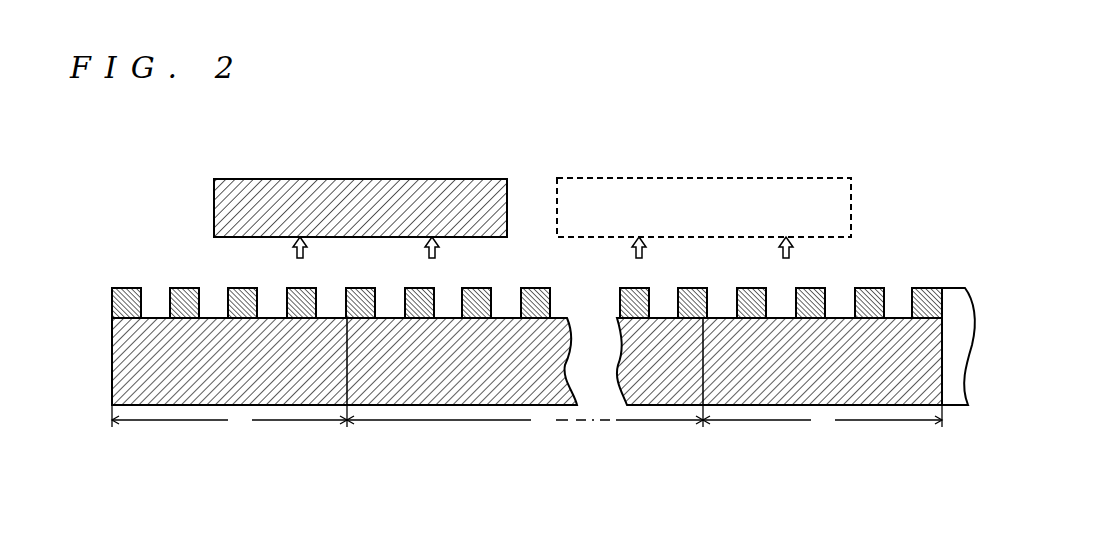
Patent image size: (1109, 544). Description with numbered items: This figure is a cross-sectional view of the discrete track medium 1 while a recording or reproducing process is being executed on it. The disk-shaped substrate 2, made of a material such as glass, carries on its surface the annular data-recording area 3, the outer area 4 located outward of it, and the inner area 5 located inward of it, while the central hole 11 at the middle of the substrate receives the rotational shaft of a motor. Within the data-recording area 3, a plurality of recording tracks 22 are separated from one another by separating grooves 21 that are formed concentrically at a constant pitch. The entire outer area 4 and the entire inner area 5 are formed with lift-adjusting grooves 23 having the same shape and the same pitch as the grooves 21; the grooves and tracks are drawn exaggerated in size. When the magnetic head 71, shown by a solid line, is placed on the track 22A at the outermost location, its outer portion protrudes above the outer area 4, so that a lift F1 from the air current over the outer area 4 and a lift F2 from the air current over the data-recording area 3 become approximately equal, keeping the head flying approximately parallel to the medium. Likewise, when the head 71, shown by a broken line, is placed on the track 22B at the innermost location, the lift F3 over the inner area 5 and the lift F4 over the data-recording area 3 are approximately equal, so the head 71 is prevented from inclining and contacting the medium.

The discrete track medium 1 is at (457, 462).
The disk-shaped substrate 2 is at (853, 402).
The data-recording area 3 is at (525, 419).
The outer area 4 is at (229, 419).
The inner area 5 is at (822, 419).
The central hole 11 is at (955, 338).
The separating grooves 21 is at (447, 303).
The recording tracks 22 is at (477, 289).
The track at outermost location 22A is at (358, 292).
The track at innermost location 22B is at (697, 290).
The lift-adjusting grooves 23 is at (153, 305).
The magnetic head 71 is at (214, 193).
The lift F1 is at (293, 250).
The lift F2 is at (440, 251).
The lift F3 is at (794, 249).
The lift F4 is at (631, 248).